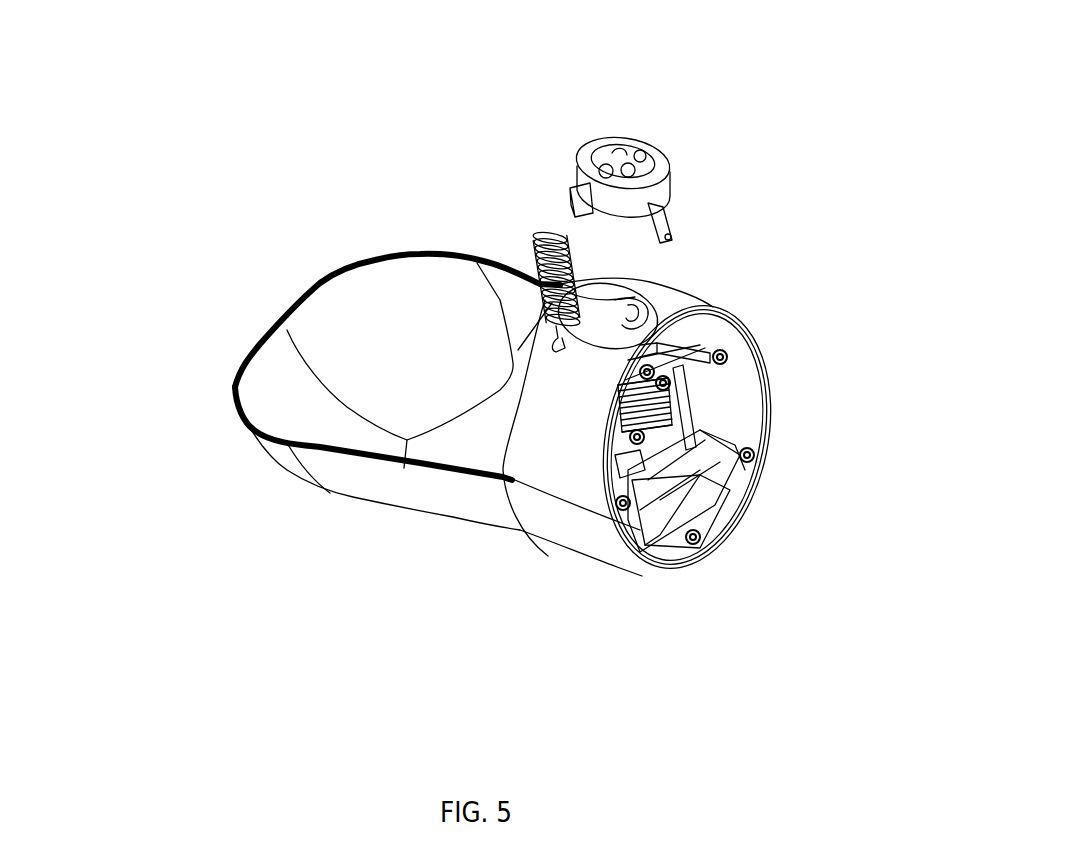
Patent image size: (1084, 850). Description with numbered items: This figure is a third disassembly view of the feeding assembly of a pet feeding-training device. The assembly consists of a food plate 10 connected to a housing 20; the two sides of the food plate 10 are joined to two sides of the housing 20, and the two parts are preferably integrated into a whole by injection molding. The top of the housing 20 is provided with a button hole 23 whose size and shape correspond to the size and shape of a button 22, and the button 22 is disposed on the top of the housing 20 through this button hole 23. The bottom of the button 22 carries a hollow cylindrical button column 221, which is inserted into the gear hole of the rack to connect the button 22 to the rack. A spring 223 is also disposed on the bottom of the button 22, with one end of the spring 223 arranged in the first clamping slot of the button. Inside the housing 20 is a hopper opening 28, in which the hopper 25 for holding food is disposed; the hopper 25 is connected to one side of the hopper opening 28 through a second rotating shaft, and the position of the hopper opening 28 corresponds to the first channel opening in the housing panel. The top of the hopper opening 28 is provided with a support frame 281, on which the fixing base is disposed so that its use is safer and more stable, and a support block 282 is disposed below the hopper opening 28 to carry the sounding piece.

The food plate 10 is at (400, 297).
The housing 20 is at (532, 410).
The button 22 is at (662, 160).
The button column 221 is at (670, 222).
The spring 223 is at (532, 243).
The button hole 23 is at (622, 300).
The hopper 25 is at (695, 455).
The hopper opening 28 is at (648, 540).
The support frame 281 is at (662, 388).
The support block 282 is at (683, 523).